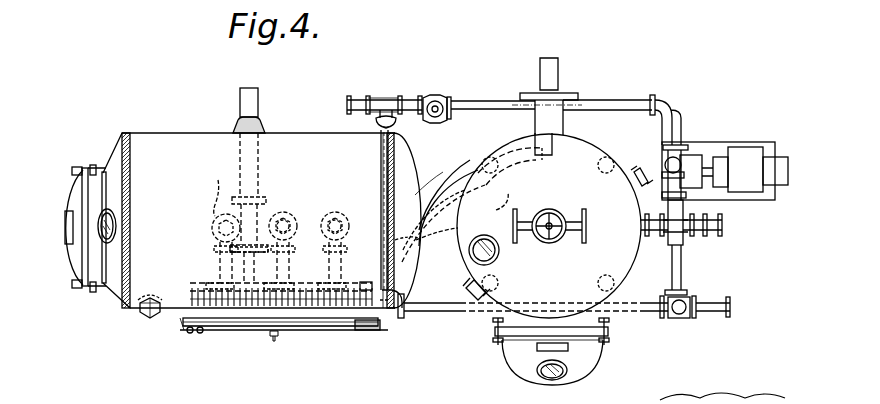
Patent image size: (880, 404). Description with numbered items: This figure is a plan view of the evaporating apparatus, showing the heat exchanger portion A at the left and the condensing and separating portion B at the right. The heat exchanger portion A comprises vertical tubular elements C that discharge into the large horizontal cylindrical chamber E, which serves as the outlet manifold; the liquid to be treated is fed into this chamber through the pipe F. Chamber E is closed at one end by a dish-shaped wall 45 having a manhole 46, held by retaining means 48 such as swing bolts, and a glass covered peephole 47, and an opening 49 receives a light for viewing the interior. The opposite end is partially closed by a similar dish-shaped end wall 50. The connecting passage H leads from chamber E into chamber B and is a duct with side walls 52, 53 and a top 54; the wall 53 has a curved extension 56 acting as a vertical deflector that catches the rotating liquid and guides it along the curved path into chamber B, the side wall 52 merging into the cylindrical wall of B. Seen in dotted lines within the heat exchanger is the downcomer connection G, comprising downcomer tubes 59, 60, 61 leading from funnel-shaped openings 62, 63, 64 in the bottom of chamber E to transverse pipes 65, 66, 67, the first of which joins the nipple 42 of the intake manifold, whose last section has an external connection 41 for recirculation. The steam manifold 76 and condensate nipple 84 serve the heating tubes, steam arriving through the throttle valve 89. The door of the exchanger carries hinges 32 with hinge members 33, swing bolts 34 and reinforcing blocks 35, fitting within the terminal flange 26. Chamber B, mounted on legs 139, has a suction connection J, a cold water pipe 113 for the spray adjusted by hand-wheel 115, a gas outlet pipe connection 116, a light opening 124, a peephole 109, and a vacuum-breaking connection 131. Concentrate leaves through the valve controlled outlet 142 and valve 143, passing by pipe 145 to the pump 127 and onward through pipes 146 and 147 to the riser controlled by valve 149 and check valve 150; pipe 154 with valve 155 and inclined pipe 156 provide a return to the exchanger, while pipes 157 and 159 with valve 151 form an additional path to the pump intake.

The terminal flange 26 is at (246, 330).
The hinges 32 is at (371, 331).
The hinge member 33 is at (314, 328).
The swing bolt 34 is at (195, 332).
The reinforcing blocks 35 is at (238, 342).
The external connection 41 is at (386, 318).
The nipple 42 is at (190, 293).
The dish-shaped wall 45 is at (104, 153).
The manhole 46 is at (78, 202).
The glass covered peephole 47 is at (67, 240).
The retaining means 48 is at (74, 170).
The opening 49 is at (117, 222).
The dish-shaped end wall 50 is at (392, 170).
The side wall 52 is at (440, 208).
The side wall 53 is at (494, 195).
The top 54 is at (470, 180).
The extension 56 is at (416, 242).
The downcomer tube 59 is at (212, 226).
The downcomer tube 60 is at (288, 212).
The downcomer tube 61 is at (340, 212).
The funnel-shaped opening 62 is at (218, 186).
The funnel-shaped opening 63 is at (292, 220).
The funnel-shaped opening 64 is at (343, 222).
The transverse pipe 65 is at (218, 266).
The transverse pipe 66 is at (289, 272).
The transverse pipe 67 is at (342, 270).
The steam manifold 76 is at (372, 290).
The nipple 84 is at (268, 250).
The throttle valve 89 is at (262, 196).
The peephole 109 is at (470, 292).
The pipe 113 is at (513, 226).
The hand-wheel 115 is at (555, 210).
The pipe connection 116 is at (588, 230).
The light opening 124 is at (499, 256).
The pump 127 is at (690, 158).
The connection 131 is at (658, 315).
The legs 139 is at (604, 175).
The valve controlled outlet 142 is at (668, 240).
The valve 143 is at (715, 222).
The pipe 145 is at (680, 192).
The pipe 146 is at (668, 150).
The pipe 147 is at (618, 104).
The valve 149 is at (438, 91).
The check valve 150 is at (442, 97).
The valve 151 is at (705, 302).
The pipe 154 is at (397, 94).
The valve 155 is at (362, 96).
The inclined pipe 156 is at (428, 173).
The pipe 157 is at (478, 315).
The pipe 159 is at (682, 262).
The heat exchanger portion A is at (196, 135).
The condensing and separating portion B is at (614, 150).
The tubular elements C is at (228, 330).
The horizontal cylindrical chamber E is at (301, 134).
The pipe F is at (143, 320).
The outlet passage G is at (212, 250).
The connecting passage H is at (449, 252).
The suction connection J is at (576, 82).